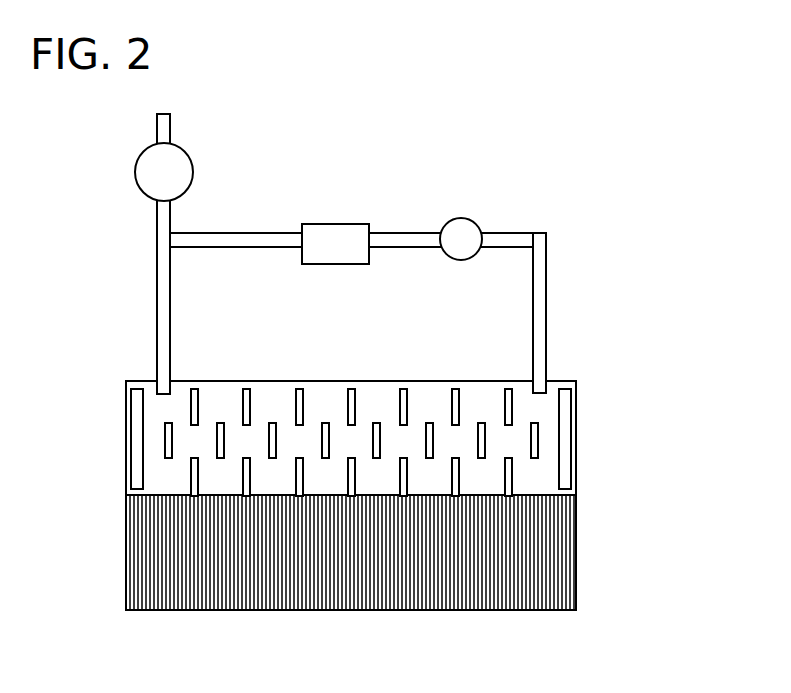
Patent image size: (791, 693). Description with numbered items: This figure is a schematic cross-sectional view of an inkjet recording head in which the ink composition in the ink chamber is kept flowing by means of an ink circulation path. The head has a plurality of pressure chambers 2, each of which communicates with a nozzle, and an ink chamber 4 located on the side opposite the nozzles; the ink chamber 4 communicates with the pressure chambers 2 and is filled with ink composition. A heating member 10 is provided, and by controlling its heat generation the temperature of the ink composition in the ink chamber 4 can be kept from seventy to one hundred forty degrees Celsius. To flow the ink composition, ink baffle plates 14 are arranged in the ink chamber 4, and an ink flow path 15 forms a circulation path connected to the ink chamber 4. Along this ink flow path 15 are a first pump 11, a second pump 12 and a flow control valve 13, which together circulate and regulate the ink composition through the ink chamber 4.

The pressure chamber 2 is at (437, 600).
The ink chamber 4 is at (432, 485).
The heating member 10 is at (131, 467).
The pump 1 11 is at (470, 218).
The pump 2 12 is at (146, 152).
The flow control valve 13 is at (335, 223).
The baffle plate 14 is at (457, 410).
The ink flow path 15 is at (170, 343).